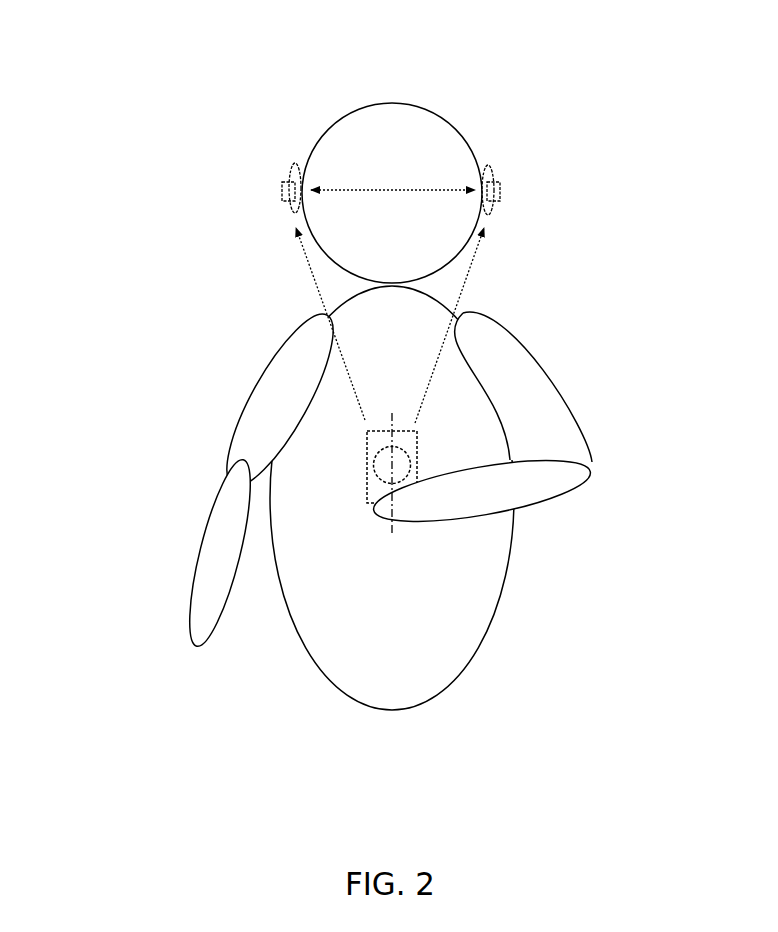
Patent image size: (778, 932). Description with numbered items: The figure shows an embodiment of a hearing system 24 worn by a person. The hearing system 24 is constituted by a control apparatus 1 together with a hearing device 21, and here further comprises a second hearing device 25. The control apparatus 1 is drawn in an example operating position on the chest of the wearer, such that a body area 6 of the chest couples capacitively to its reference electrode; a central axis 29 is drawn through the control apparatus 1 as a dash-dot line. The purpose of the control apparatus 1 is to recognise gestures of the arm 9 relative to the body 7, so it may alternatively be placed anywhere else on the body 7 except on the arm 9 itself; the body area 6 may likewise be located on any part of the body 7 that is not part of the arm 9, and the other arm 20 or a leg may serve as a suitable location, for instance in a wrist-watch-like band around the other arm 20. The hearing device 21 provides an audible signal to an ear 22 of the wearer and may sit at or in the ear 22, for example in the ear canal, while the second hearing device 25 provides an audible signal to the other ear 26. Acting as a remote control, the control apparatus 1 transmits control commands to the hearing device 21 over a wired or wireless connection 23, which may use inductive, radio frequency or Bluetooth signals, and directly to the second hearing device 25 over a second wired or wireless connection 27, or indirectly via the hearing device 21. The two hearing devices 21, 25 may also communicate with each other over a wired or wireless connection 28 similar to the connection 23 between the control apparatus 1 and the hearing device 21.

The control apparatus 1 is at (262, 485).
The body area 6 is at (375, 465).
The body 7 is at (445, 385).
The arm 9 is at (500, 488).
The other arm 20 is at (275, 383).
The hearing device 21 is at (281, 188).
The ear 22 is at (288, 169).
The wired or wireless connection 23 is at (318, 290).
The hearing system 24 is at (282, 82).
The second hearing device 25 is at (502, 187).
The other ear 26 is at (495, 172).
The second wired or wireless connection 27 is at (468, 285).
The wired or wireless connection 28 is at (412, 187).
The central axis of device 29 is at (397, 532).